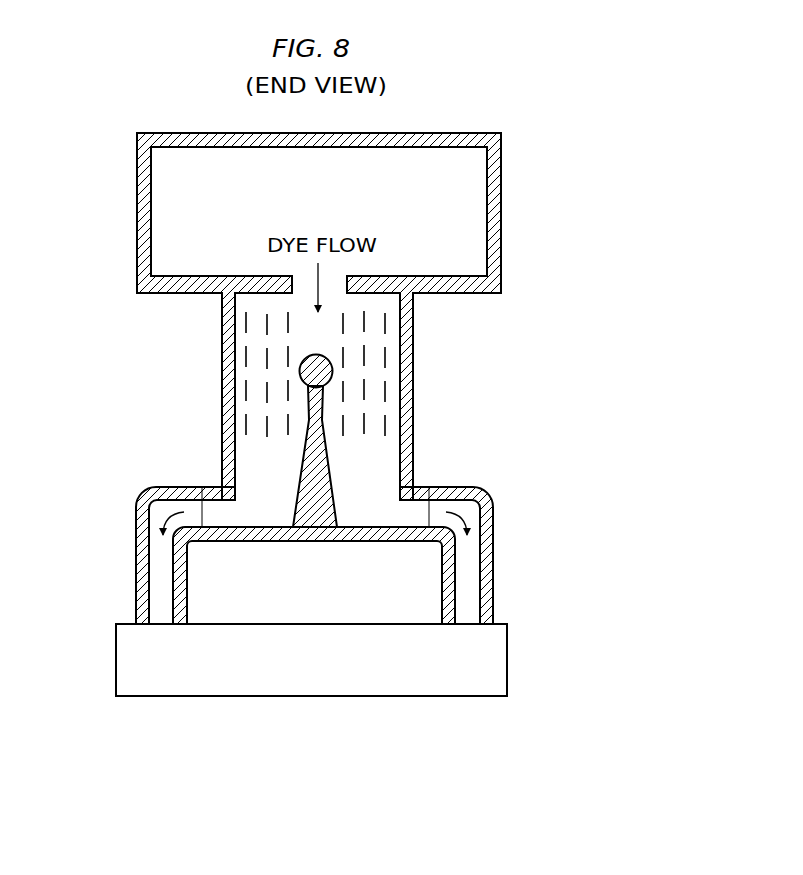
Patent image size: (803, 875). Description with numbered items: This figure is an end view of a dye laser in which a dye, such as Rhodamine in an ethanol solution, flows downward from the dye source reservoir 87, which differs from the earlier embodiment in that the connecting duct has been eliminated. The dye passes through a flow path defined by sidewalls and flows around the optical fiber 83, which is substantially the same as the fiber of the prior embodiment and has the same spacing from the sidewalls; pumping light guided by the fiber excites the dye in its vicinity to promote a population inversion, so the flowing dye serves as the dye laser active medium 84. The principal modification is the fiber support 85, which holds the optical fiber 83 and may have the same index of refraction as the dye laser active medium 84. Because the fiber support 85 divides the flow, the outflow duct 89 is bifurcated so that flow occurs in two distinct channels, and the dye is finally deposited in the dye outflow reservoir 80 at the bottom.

The dye outflow reservoir 80 is at (307, 697).
The optical fiber 83 is at (299, 371).
The dye laser active medium 84 is at (385, 384).
The fiber support 85 is at (312, 432).
The dye source reservoir 87 is at (502, 218).
The outflow duct 89 is at (442, 580).